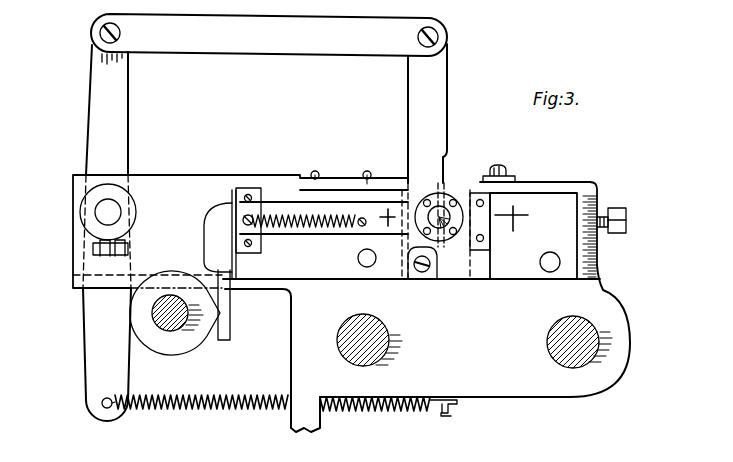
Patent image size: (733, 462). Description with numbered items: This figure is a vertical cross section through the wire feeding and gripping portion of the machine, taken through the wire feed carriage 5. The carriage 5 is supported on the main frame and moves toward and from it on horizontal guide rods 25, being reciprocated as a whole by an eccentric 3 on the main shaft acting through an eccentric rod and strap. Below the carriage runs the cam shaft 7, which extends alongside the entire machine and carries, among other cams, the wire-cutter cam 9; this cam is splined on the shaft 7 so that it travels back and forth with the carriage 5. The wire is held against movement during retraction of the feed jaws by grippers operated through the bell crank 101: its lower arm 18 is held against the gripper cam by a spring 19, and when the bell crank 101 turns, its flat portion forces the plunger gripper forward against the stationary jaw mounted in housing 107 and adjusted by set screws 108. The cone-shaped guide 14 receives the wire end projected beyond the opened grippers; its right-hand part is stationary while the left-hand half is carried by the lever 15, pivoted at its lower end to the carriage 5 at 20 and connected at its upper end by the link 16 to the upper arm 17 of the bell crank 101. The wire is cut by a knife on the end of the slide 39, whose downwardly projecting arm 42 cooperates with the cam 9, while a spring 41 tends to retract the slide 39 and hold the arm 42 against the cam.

The eccentric 3 is at (376, 220).
The wire feed carriage 5 is at (549, 412).
The cam shaft 7 is at (170, 333).
The wire-cutter cam 9 is at (188, 340).
The cone-shaped guide 14 is at (447, 208).
The lever 15 is at (428, 108).
The link 16 is at (289, 40).
The upper arm 17 is at (117, 112).
The lower arm 18 is at (105, 337).
The spring 19 is at (202, 407).
The pivot 20 is at (424, 272).
The horizontal guide rods 25 is at (380, 343).
The knife slide 39 is at (356, 229).
The spring 41 is at (296, 226).
The downwardly projecting arm 42 is at (228, 315).
The bell crank 101 is at (105, 212).
The housing 107 is at (562, 185).
The set screws 108 is at (505, 168).